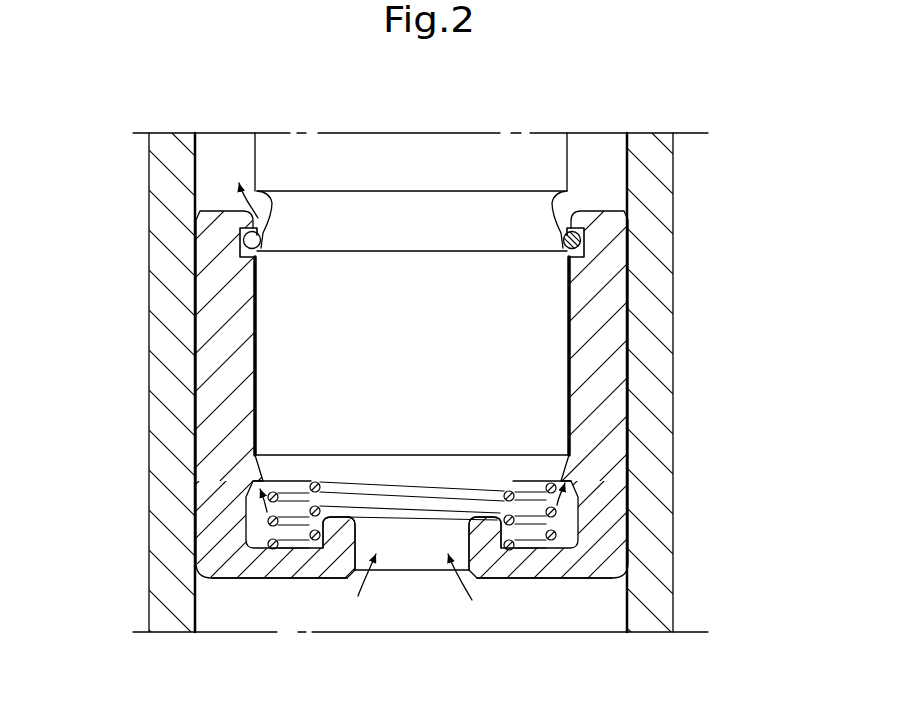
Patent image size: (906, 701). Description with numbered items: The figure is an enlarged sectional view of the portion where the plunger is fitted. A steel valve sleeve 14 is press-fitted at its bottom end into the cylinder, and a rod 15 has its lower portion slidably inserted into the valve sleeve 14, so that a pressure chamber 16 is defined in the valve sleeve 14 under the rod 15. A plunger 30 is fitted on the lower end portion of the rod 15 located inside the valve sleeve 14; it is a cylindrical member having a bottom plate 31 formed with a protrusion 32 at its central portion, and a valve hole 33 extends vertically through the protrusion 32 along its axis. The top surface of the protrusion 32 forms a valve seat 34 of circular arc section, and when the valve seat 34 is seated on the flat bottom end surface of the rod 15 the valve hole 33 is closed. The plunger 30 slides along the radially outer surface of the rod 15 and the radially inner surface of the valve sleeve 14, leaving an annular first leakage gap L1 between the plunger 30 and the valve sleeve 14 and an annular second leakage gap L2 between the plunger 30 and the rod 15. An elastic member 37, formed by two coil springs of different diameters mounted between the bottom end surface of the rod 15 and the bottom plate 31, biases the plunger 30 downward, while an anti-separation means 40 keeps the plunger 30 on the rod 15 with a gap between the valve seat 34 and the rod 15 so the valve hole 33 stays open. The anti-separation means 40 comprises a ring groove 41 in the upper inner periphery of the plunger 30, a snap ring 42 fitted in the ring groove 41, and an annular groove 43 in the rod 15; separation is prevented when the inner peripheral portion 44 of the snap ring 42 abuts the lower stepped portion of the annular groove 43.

The valve sleeve 14 is at (160, 166).
The rod 15 is at (327, 147).
The pressure chamber 16 is at (260, 607).
The plunger 30 is at (207, 313).
The bottom plate 31 is at (313, 577).
The protrusion 32 is at (489, 528).
The valve hole 33 is at (412, 573).
The valve seat 34 is at (331, 483).
The elastic member 37 is at (552, 540).
The anti-separation means 40 is at (586, 238).
The ring groove 41 is at (582, 255).
The snap ring 42 is at (580, 212).
The annular groove 43 is at (568, 192).
The inner peripheral portion 44 is at (562, 229).
The first leakage gap L1 is at (195, 387).
The second leakage gap L2 is at (253, 423).